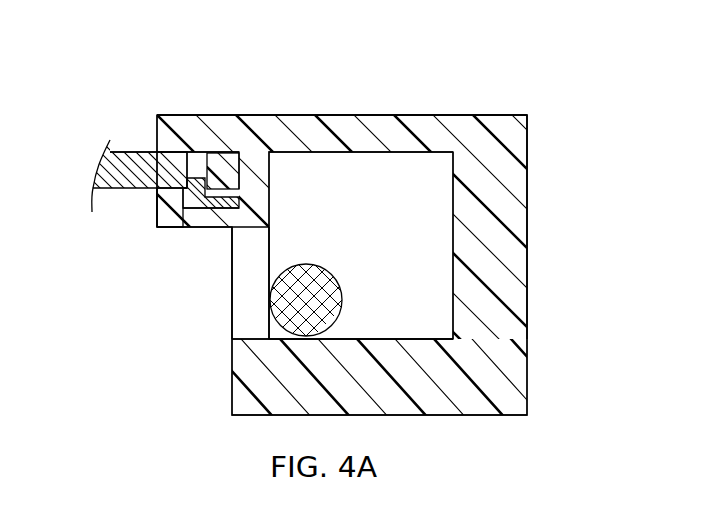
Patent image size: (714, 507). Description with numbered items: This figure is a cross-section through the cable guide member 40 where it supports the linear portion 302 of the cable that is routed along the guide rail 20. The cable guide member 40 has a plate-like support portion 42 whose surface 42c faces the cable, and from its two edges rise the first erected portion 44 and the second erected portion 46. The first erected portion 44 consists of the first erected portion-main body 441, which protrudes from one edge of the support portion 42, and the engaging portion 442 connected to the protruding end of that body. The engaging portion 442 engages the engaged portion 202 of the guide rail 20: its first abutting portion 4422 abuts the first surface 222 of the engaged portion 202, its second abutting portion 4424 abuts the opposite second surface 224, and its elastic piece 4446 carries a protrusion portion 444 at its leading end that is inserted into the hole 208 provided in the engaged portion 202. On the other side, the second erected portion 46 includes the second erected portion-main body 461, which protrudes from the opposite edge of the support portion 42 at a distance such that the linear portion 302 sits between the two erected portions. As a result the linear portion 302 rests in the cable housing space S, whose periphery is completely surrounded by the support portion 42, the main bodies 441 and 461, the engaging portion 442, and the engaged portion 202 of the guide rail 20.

The guide rail 20 is at (137, 149).
The engaged portion 202 is at (155, 150).
The hole 208 is at (183, 152).
The first surface 222 is at (218, 170).
The second surface 224 is at (200, 200).
The linear portion 302 is at (316, 260).
The cable housing space S is at (403, 213).
The cable guide member 40 is at (505, 112).
The first erected portion 44 is at (529, 140).
The first erected portion-main body 441 is at (500, 245).
The engaging portion 442 is at (236, 113).
The first abutting portion 4422 is at (197, 135).
The protrusion portion 444 is at (172, 196).
The second abutting portion 4424 is at (155, 212).
The elastic piece 4446 is at (190, 210).
The support portion 42 is at (388, 376).
The surface 42c is at (390, 339).
The second erected portion 46 is at (231, 288).
The second erected portion-main body 461 is at (250, 310).